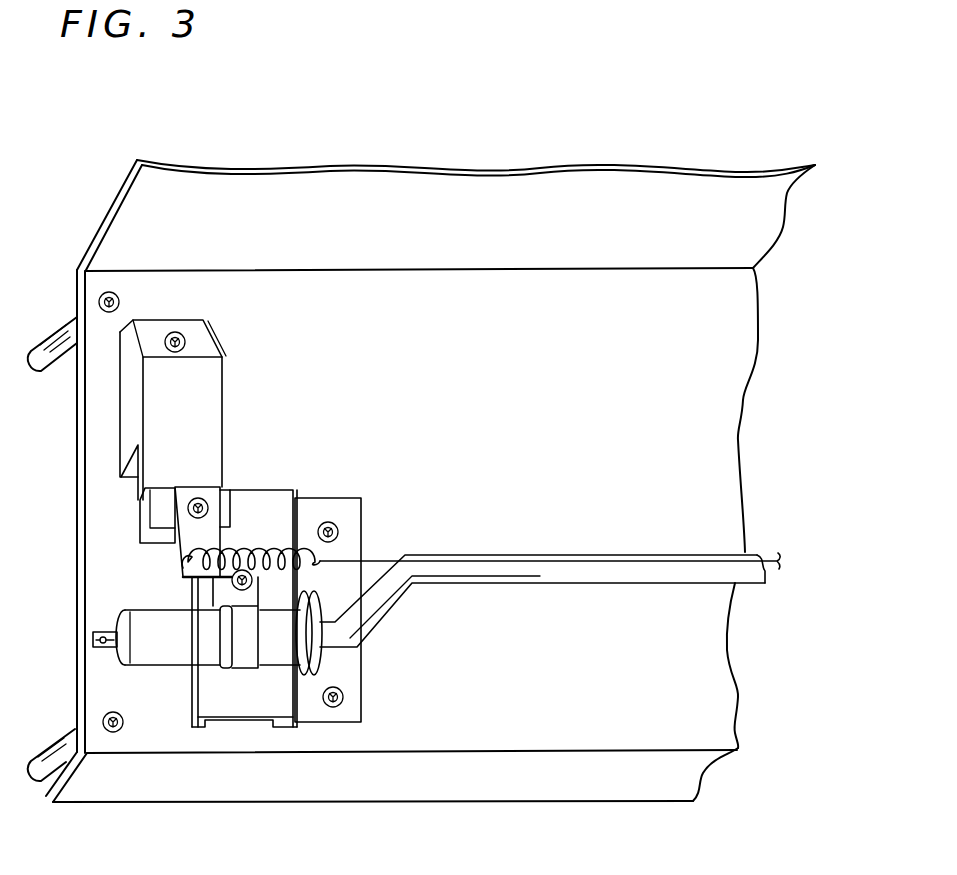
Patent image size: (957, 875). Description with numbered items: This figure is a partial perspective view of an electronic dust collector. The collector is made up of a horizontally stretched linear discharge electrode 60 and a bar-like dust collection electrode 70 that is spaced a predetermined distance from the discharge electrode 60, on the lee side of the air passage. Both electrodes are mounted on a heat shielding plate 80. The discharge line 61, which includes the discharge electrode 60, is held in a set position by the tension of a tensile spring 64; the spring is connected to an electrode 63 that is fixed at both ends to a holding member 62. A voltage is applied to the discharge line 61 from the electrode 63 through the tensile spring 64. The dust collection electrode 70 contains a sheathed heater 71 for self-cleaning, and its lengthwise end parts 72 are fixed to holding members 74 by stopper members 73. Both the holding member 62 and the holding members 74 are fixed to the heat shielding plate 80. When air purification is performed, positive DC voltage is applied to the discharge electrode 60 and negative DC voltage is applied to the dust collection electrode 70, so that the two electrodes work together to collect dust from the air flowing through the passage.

The discharge electrode 60 is at (374, 542).
The discharge line 61 is at (633, 553).
The holding member 62 is at (213, 398).
The electrode 63 is at (200, 490).
The tensile spring 64 is at (265, 548).
The dust collection electrode 70 is at (399, 672).
The sheathed heater 71 is at (637, 572).
The lengthwise end parts 72 is at (145, 662).
The stopper members 73 is at (242, 658).
The holding members 74 is at (263, 710).
The heat shielding plate 80 is at (732, 308).